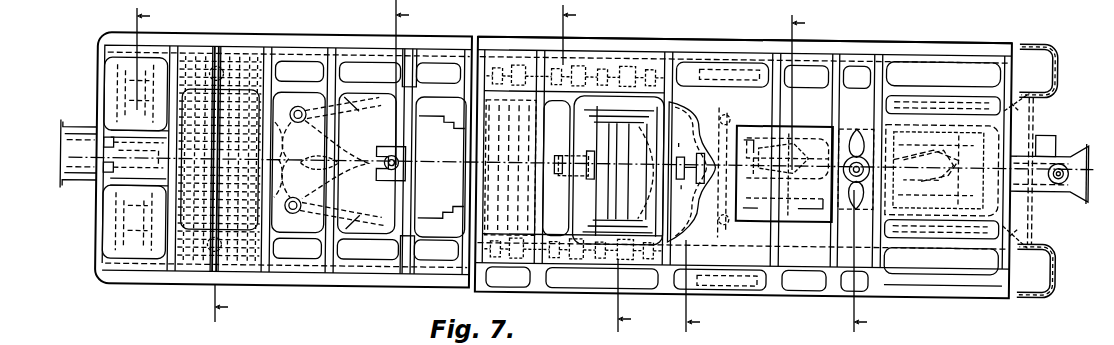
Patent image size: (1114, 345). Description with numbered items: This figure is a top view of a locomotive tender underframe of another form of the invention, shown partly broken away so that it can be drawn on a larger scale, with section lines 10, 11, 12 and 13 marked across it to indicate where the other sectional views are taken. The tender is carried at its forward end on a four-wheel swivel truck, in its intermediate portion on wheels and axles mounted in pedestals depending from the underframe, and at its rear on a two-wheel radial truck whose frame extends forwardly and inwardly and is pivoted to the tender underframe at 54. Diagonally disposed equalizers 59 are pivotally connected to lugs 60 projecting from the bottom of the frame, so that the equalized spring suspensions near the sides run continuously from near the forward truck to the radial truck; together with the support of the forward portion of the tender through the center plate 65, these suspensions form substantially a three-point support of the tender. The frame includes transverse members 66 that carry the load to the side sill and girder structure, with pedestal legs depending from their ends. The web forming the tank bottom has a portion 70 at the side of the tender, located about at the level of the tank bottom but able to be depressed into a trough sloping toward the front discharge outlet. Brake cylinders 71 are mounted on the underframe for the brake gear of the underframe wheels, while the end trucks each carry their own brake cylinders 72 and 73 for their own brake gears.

The section line 10- 10 is at (842, 174).
The section line 11- 11 is at (611, 168).
The section line 12- 12 is at (324, 161).
The section line 13- 13 is at (431, 170).
The pivot of radial truck frame to tender underframe 54 is at (400, 156).
The diagonally disposed equalizers 59 is at (345, 162).
The lugs 60 is at (321, 160).
The center plate 65 is at (870, 160).
The transverse members 66 is at (690, 190).
The web portion at the side of the tender 70 is at (745, 276).
The brake cylinders 71 is at (693, 150).
The brake cylinder 72 is at (940, 160).
The brake cylinder 73 is at (762, 136).